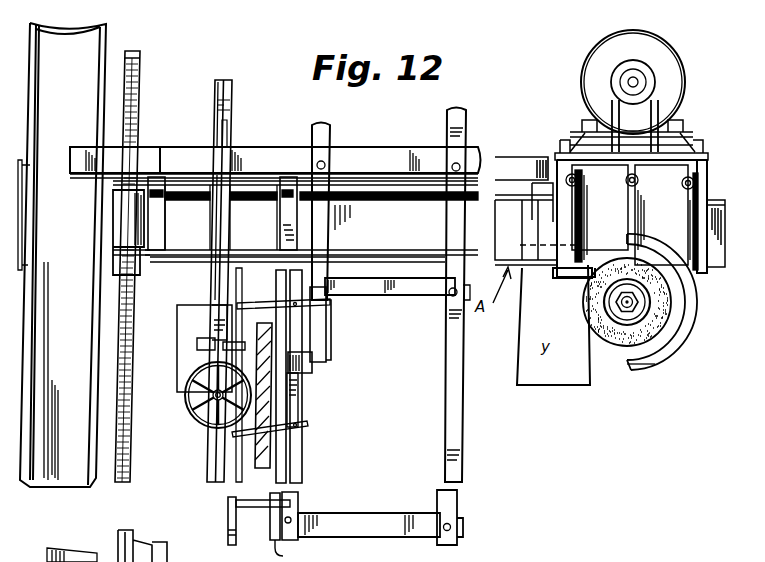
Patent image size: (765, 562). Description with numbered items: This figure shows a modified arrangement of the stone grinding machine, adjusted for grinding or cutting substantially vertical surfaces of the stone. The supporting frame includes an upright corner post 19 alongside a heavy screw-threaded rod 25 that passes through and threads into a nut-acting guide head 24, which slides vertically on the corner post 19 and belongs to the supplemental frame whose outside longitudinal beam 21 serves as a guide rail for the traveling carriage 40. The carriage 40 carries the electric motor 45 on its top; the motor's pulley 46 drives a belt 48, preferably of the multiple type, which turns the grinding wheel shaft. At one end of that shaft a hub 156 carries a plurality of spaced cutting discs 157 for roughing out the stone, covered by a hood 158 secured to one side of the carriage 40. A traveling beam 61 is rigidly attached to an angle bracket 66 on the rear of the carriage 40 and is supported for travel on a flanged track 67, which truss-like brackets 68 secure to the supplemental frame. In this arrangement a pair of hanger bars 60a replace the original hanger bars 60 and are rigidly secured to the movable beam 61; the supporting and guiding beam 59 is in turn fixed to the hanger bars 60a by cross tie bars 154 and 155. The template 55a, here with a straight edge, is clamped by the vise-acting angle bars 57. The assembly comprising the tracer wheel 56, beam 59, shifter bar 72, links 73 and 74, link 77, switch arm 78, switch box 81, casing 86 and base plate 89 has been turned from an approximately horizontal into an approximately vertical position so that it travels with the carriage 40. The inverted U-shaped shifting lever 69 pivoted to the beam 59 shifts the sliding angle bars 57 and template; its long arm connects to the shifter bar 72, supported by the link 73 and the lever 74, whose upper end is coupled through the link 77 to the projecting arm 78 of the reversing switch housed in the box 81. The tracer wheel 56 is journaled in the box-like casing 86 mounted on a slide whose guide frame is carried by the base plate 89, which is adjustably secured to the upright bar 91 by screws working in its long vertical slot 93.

The corner post 19 is at (62, 255).
The screw-threaded rod 25 is at (140, 68).
The flanged track 67 is at (147, 150).
The traveling beam 61 is at (383, 162).
The upright bar 91 is at (233, 101).
The vertical slot 93 is at (229, 132).
The hanger bar 60a is at (447, 393).
The guide block 24 is at (105, 222).
The truss-like bracket 68 is at (164, 216).
The longitudinal beam 21 is at (176, 260).
The link-like lever 74 is at (263, 298).
The cross tie bar 154 is at (377, 290).
The box-like casing 86 is at (178, 320).
The base plate 89 is at (180, 338).
The link 77 is at (330, 345).
The projecting arm 78 is at (318, 368).
The switch box 81 is at (308, 378).
The tracer wheel 56 is at (185, 397).
The shifting lever 69 is at (300, 420).
The template 55a is at (280, 442).
The supporting and guiding beam 59 is at (296, 468).
The shifter bar 72 is at (228, 520).
The link 73 is at (249, 509).
The angle bar 57 is at (25, 556).
The cross tie bar 155 is at (384, 515).
The hanger bar 60 is at (167, 551).
The electric motor 45 is at (665, 50).
The pulley 46 is at (652, 88).
The belt 48 is at (658, 118).
The carriage 40 is at (639, 219).
The angle bracket 66 is at (530, 203).
The hub 156 is at (645, 310).
The cutting disc 157 is at (622, 348).
The hood 158 is at (667, 360).